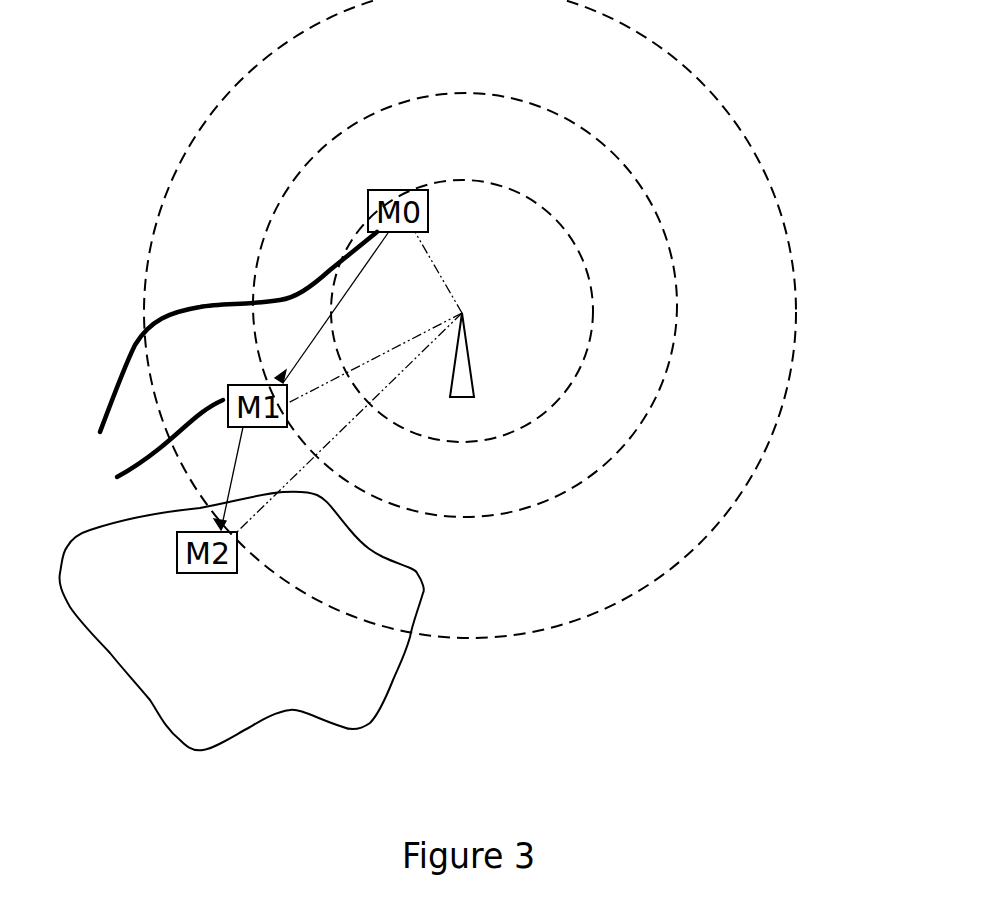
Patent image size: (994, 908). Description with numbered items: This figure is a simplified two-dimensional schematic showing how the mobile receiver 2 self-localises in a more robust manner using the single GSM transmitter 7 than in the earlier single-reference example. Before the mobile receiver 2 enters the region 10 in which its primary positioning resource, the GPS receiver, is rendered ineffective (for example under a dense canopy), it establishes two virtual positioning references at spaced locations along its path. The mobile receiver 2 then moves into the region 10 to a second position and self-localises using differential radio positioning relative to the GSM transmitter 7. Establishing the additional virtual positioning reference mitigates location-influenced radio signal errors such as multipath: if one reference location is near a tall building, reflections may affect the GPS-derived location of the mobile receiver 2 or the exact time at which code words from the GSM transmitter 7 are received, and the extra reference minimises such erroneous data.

The mobile receiver 2 is at (170, 568).
The GSM transmitter 7 is at (478, 332).
The region 10 is at (265, 671).